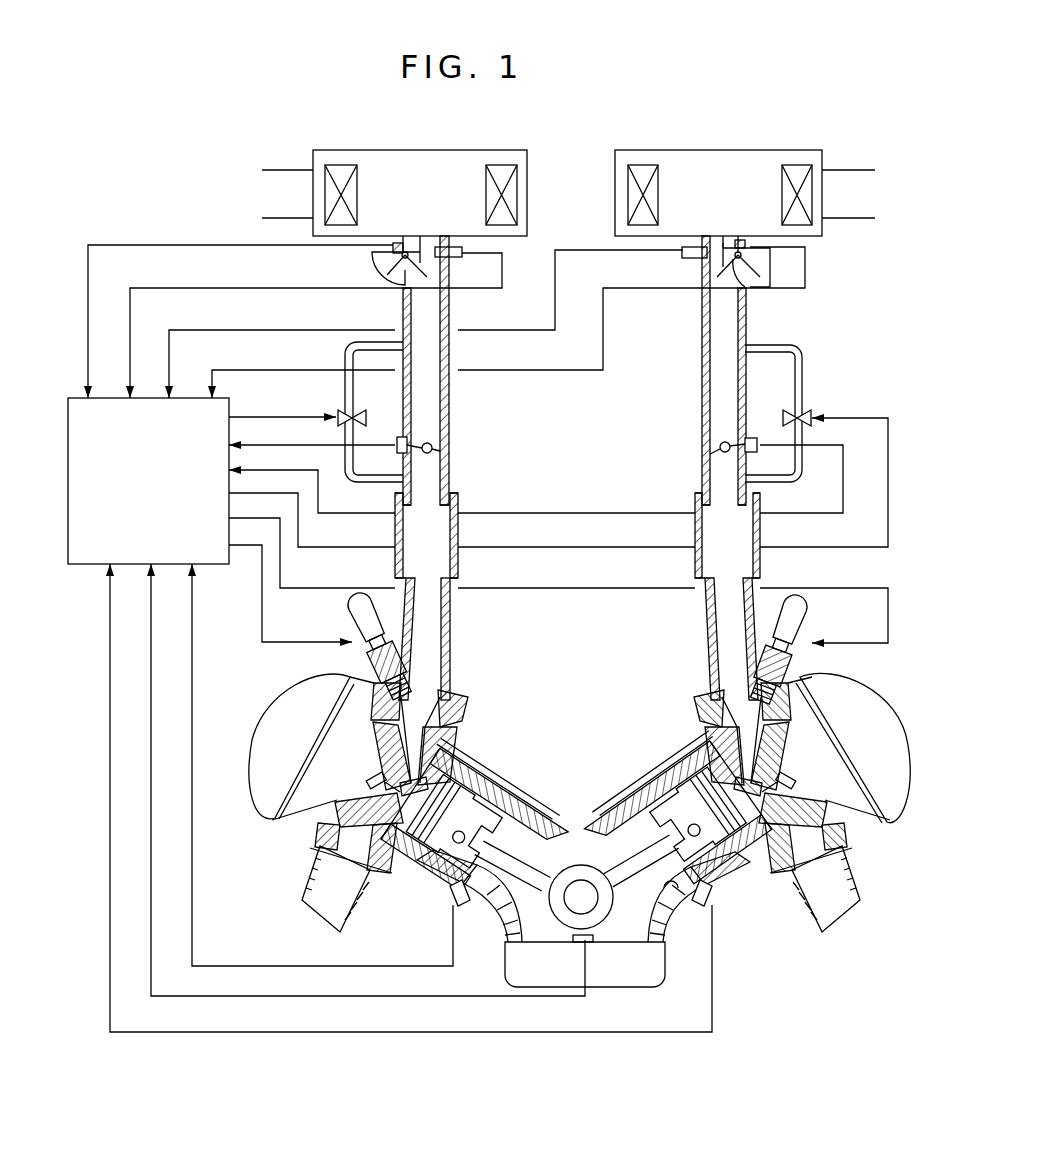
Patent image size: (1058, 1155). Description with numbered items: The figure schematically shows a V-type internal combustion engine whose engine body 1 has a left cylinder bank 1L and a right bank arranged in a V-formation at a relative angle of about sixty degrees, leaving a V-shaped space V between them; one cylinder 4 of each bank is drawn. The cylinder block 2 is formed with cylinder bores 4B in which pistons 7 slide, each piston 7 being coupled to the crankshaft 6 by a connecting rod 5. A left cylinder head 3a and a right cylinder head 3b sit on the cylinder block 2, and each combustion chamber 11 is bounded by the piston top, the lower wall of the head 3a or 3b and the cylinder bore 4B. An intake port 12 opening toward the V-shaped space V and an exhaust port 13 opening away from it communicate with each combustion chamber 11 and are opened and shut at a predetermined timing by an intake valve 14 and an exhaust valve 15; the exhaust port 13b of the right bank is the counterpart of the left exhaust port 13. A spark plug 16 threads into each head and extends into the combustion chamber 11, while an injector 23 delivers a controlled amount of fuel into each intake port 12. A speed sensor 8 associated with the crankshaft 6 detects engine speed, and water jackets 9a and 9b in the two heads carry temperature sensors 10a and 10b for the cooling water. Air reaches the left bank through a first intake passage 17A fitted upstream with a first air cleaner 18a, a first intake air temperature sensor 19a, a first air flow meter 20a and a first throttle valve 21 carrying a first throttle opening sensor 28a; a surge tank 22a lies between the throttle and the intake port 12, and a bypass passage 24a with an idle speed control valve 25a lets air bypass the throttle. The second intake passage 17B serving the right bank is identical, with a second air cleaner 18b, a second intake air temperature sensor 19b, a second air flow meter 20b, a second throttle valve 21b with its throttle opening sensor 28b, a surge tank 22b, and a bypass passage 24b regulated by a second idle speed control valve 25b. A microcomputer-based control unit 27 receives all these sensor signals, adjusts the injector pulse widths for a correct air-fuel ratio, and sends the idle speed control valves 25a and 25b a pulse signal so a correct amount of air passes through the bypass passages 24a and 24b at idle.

The engine body 1 is at (898, 706).
The cylinder block 2 is at (587, 830).
The left cylinder head 3a is at (457, 743).
The right cylinder head 3b is at (708, 747).
The cylinder 4 is at (516, 848).
The cylinder bore 4B is at (677, 913).
The connecting rod 5 is at (643, 843).
The crankshaft 6 is at (593, 900).
The piston 7 is at (750, 870).
The speed sensor 8 is at (590, 943).
The water jacket 9a is at (440, 878).
The water jacket 9b is at (730, 885).
The temperature sensor 10a is at (463, 907).
The temperature sensor 10b is at (717, 910).
The combustion chamber 11 is at (745, 768).
The intake port 12 is at (700, 708).
The exhaust port 13 is at (355, 840).
The right exhaust port 13b is at (808, 905).
The intake valve 14 is at (780, 738).
The exhaust valve 15 is at (815, 812).
The spark plug 16 is at (787, 780).
The first intake passage 17A is at (430, 398).
The second intake passage 17B is at (720, 366).
The first air cleaner 18a is at (445, 162).
The second air cleaner 18b is at (770, 162).
The first intake air temperature sensor 19a is at (460, 258).
The second intake air temperature sensor 19b is at (682, 253).
The first air flow sensor 20a is at (378, 264).
The second air flow sensor 20b is at (765, 270).
The left intake pressure sensor 21 is at (440, 442).
The second throttle valve 21b is at (702, 441).
The surge tank 22a is at (455, 533).
The surge tank 22b is at (758, 533).
The injector 23 is at (803, 612).
The bypass passage 24a is at (345, 398).
The bypass passage 24b is at (802, 365).
The ISC valve 25a is at (383, 403).
The ISC valve 25b is at (808, 412).
The control unit 27 is at (203, 566).
The first throttle opening sensor 28a is at (412, 457).
The second throttle opening sensor 28b is at (760, 455).
The left cylinder bank 1L is at (500, 768).
The V-shaped space V is at (584, 750).